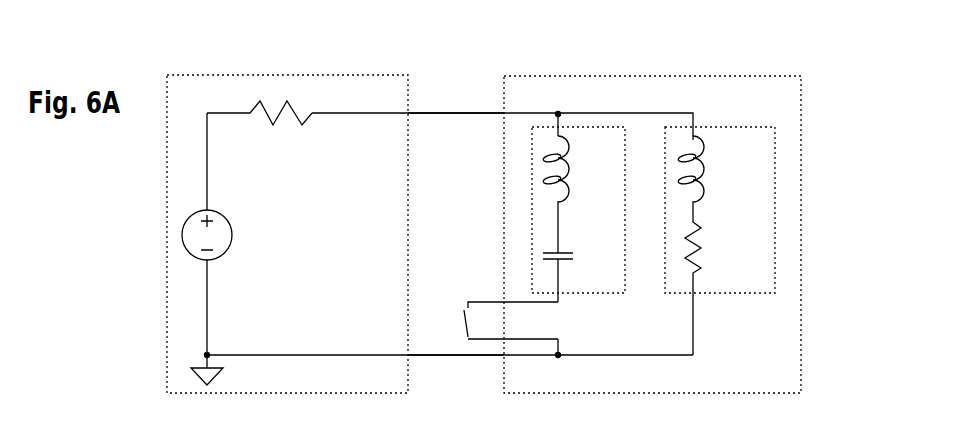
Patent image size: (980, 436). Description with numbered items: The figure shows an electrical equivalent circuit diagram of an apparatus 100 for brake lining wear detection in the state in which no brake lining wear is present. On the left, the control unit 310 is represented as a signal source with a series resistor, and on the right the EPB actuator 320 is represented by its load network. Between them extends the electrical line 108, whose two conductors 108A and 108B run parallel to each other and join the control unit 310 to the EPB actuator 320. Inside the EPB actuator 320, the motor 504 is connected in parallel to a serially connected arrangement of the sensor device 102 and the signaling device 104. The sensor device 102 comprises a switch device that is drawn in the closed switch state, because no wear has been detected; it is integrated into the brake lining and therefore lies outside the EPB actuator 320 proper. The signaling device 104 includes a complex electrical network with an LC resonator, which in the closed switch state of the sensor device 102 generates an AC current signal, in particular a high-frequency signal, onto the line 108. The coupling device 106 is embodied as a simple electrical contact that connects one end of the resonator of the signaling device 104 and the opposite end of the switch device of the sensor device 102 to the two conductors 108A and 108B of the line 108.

The apparatus 100 is at (665, 60).
The sensor device 102 is at (470, 300).
The signaling device 104 is at (591, 127).
The coupling device 106 is at (558, 114).
The electrical line 108 is at (455, 97).
The conductor 108A is at (440, 117).
The conductor 108B is at (447, 358).
The control unit 310 is at (190, 396).
The EPB actuator 320 is at (802, 322).
The motor 504 is at (730, 127).